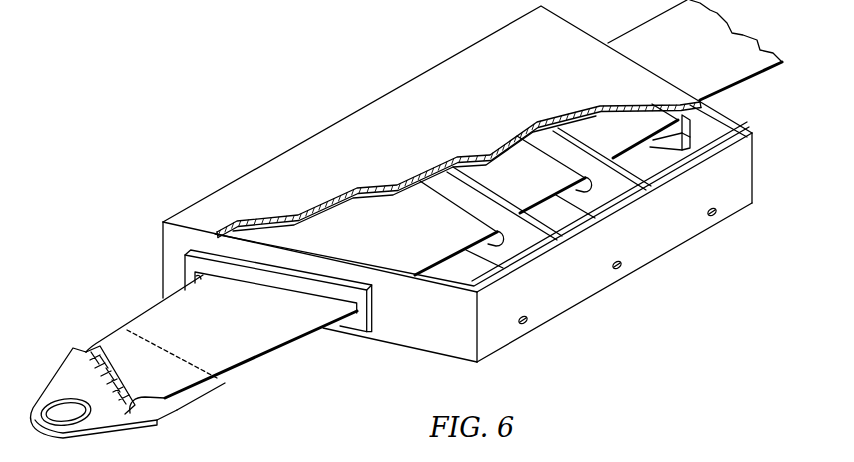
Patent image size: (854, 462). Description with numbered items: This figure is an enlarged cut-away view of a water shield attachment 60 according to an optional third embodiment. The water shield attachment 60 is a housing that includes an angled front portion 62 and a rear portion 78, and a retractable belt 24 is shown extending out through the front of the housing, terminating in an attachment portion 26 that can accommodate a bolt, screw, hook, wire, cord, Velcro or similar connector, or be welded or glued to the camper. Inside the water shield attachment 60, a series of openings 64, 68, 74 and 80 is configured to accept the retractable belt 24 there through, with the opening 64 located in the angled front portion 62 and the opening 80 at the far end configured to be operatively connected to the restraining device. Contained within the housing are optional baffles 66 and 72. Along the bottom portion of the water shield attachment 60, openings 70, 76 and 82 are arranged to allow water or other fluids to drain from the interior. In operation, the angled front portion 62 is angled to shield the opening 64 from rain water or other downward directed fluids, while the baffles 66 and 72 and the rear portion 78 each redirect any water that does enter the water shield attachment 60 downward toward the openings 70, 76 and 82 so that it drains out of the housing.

The retractable belt 24 is at (162, 318).
The attachment portion 26 is at (53, 383).
The water shield attachment 60 is at (233, 125).
The angled front portion 62 is at (420, 333).
The opening 64 is at (325, 303).
The baffle 66 is at (437, 187).
The opening 68 is at (478, 239).
The opening 70 is at (530, 323).
The baffle 72 is at (547, 140).
The opening 74 is at (567, 186).
The opening 76 is at (627, 270).
The rear portion 78 is at (713, 134).
The opening 80 is at (676, 150).
The opening 82 is at (716, 215).